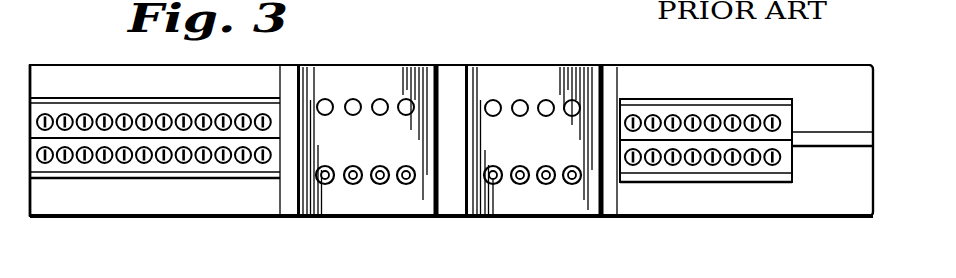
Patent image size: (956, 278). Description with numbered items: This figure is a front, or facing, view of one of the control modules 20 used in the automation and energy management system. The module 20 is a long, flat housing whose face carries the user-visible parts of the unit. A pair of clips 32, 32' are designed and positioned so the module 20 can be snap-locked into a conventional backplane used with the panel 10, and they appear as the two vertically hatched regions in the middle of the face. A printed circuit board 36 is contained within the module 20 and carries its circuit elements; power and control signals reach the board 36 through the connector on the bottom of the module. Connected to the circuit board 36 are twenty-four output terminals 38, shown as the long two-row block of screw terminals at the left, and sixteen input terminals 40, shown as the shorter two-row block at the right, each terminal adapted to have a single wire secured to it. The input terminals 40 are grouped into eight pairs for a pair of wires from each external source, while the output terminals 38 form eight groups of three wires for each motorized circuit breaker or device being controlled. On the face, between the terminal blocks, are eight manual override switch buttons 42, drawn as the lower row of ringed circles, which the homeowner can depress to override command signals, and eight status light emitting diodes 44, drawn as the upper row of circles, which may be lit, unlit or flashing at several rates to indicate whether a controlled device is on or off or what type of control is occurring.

The panel 10 is at (722, 218).
The control module 20 is at (451, 140).
The clip 32 is at (368, 108).
The clip 32' is at (534, 110).
The printed circuit board 36 is at (830, 149).
The output terminals 38 is at (83, 118).
The input terminals 40 is at (753, 118).
The manual override switch buttons 42 is at (329, 186).
The status light emitting diodes 44 is at (325, 98).